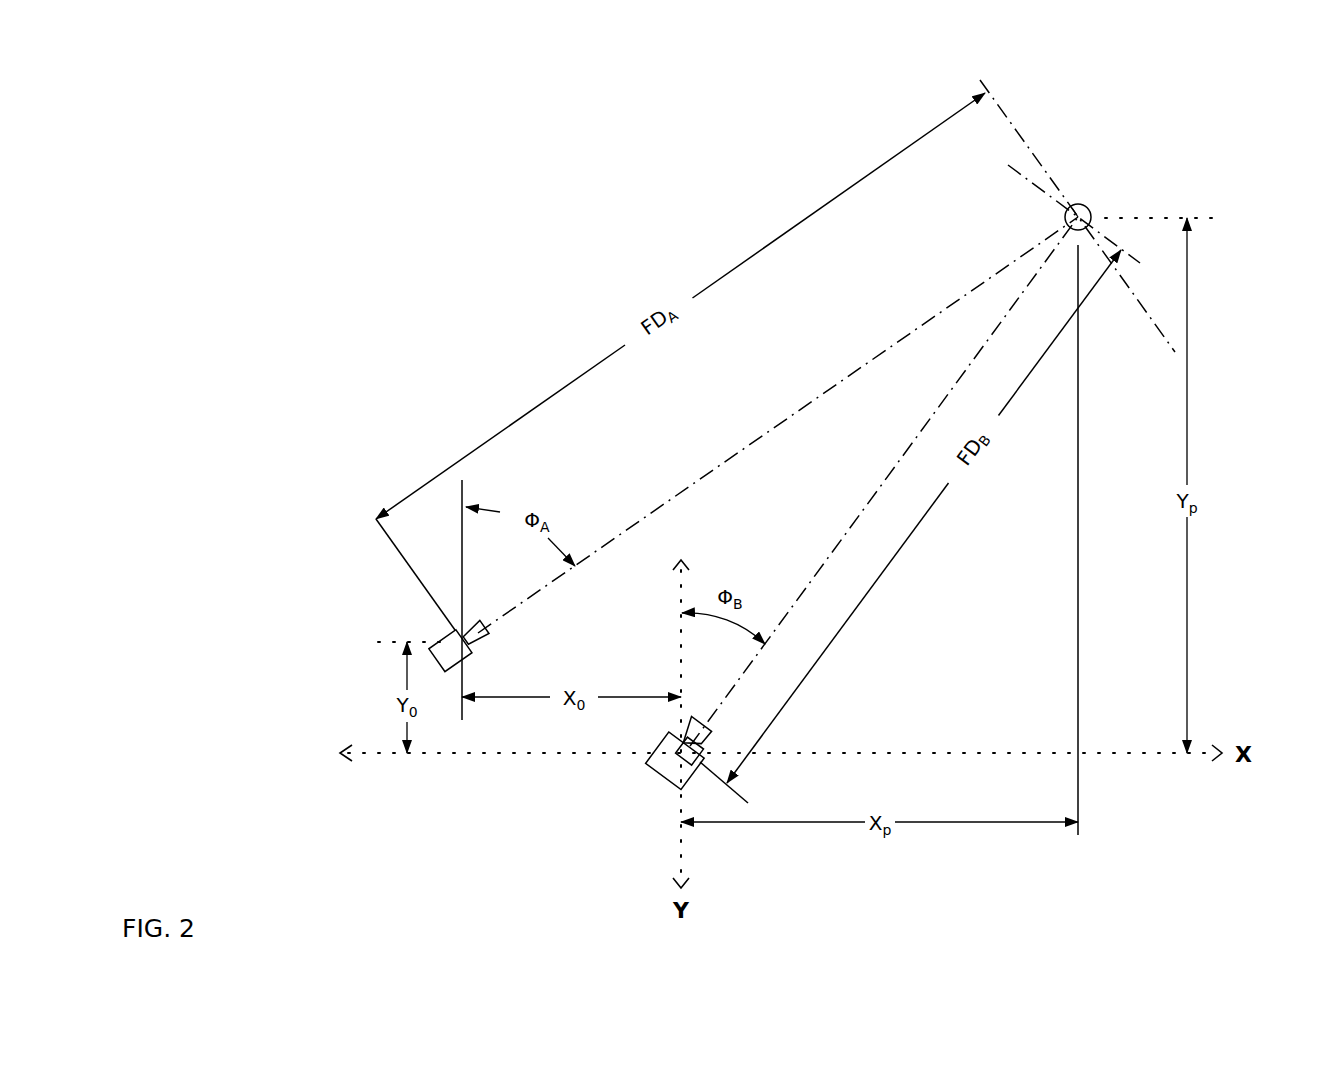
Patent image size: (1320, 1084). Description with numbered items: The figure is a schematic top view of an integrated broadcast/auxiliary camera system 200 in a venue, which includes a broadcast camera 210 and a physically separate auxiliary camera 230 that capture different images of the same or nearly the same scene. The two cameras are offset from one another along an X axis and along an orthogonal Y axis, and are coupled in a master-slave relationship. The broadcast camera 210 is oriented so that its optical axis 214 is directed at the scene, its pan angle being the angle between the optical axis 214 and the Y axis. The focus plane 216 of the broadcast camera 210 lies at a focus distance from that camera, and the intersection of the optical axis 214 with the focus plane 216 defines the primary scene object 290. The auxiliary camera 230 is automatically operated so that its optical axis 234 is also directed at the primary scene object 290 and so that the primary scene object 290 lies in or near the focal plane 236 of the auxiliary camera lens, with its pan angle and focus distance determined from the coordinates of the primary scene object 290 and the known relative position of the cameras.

The integrated broadcast/auxiliary camera system 200 is at (370, 786).
The broadcast camera 210 is at (658, 786).
The optical axis 214 is at (878, 490).
The focus plane 216 is at (1030, 182).
The auxiliary camera 230 is at (430, 632).
The optical axis 234 is at (710, 471).
The focal plane 236 is at (1012, 124).
The primary scene object 290 is at (1088, 207).